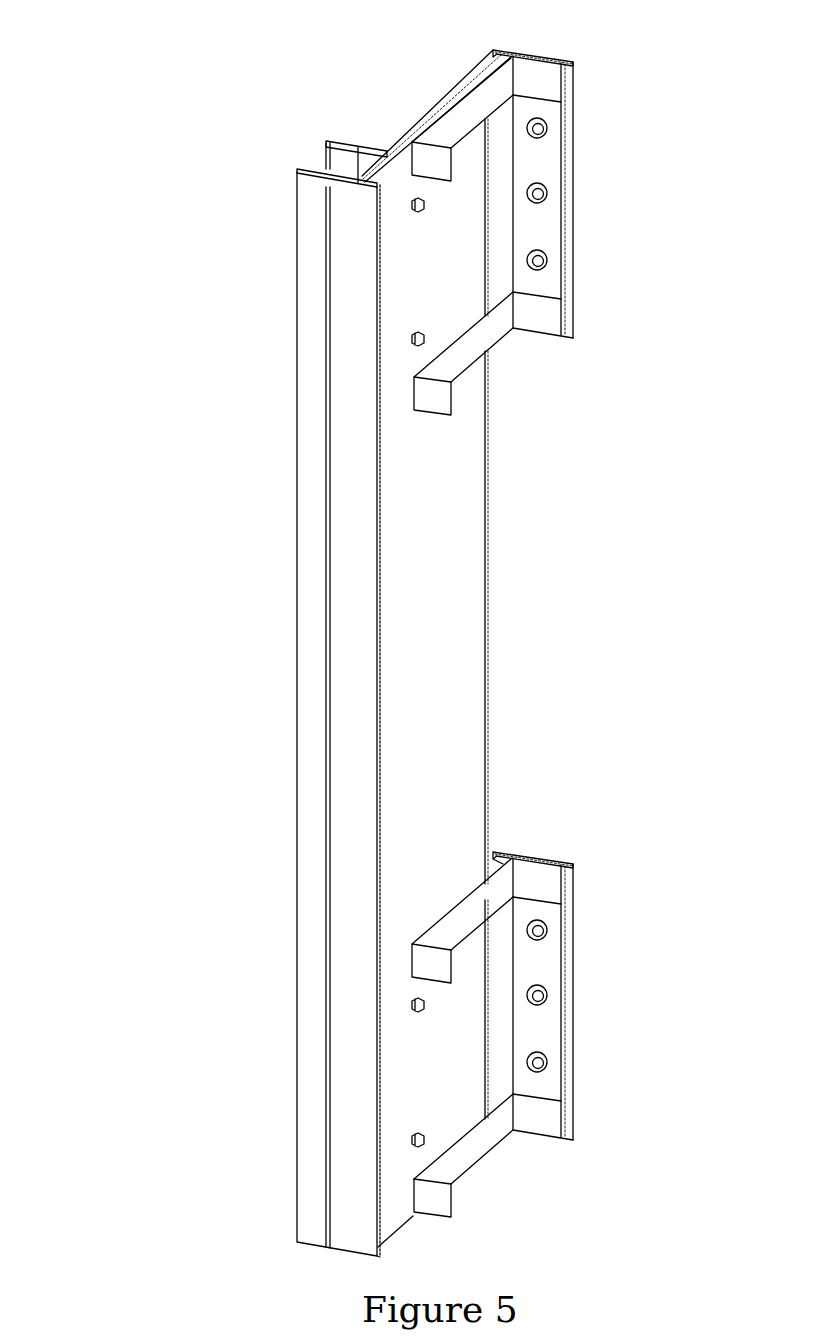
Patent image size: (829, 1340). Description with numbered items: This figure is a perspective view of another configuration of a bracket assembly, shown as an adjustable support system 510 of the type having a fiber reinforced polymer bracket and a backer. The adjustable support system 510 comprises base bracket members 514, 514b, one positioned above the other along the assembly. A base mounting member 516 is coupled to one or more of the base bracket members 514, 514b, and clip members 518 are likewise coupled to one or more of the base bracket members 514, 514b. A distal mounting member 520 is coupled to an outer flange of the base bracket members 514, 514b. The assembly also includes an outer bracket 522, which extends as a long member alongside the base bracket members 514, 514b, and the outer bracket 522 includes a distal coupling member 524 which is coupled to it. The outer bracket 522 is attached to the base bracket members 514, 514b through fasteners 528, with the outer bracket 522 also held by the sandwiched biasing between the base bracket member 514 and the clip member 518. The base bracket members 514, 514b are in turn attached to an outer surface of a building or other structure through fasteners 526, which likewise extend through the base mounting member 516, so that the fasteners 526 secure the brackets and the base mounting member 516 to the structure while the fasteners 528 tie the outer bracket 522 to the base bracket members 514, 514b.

The adjustable support system 510 is at (200, 48).
The base bracket member 514 is at (596, 225).
The base bracket member 514b is at (596, 986).
The base mounting member 516 is at (541, 165).
The clip member 518 is at (541, 76).
The distal mounting member 520 is at (368, 148).
The outer bracket 522 is at (469, 626).
The distal coupling member 524 is at (317, 170).
The fastener 526 is at (549, 263).
The fastener 528 is at (418, 330).